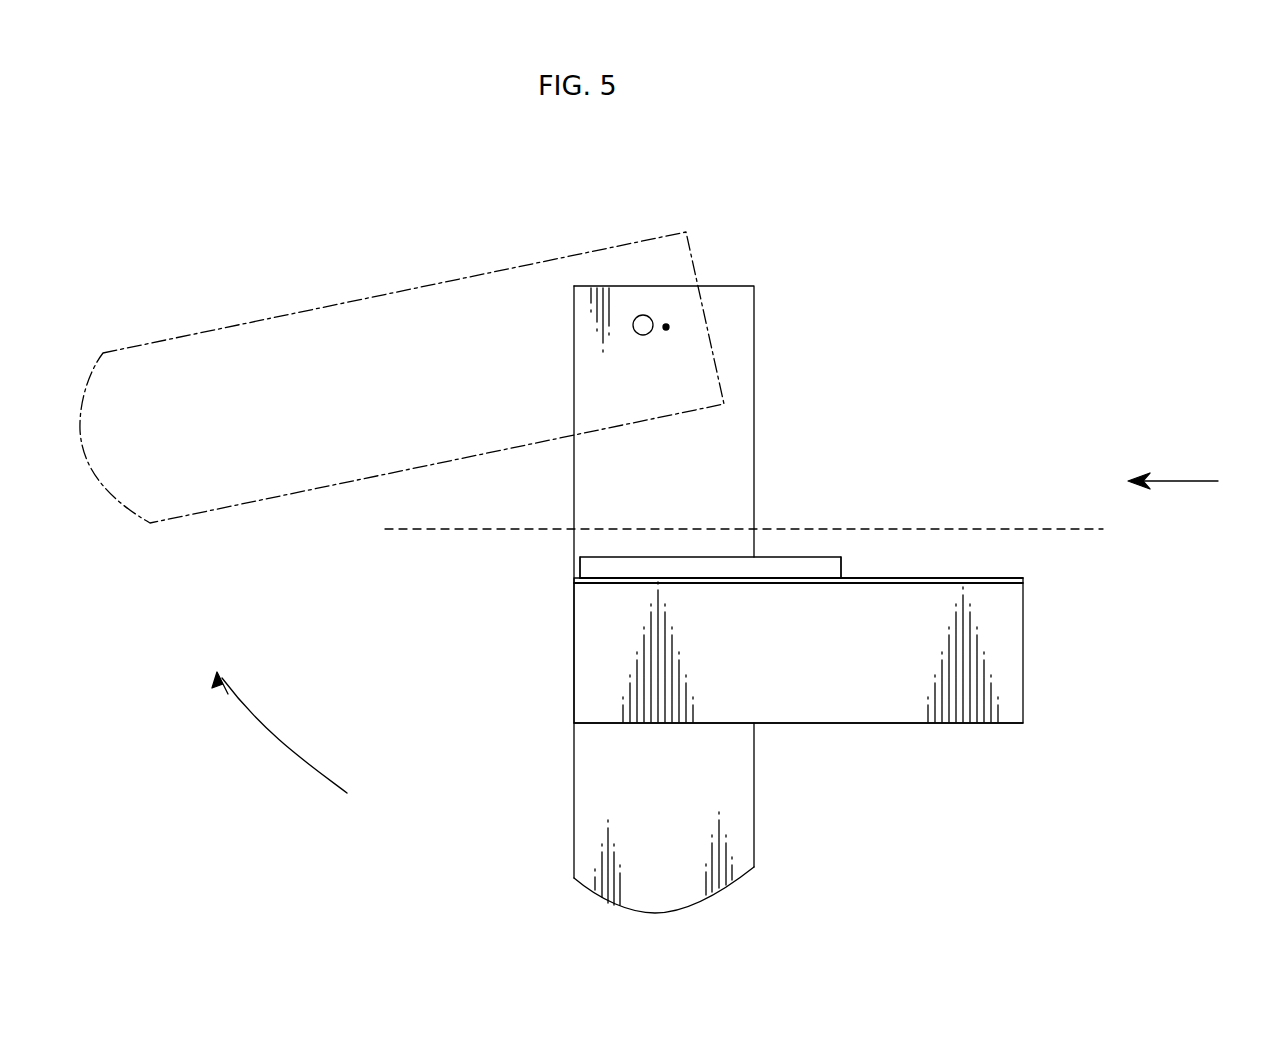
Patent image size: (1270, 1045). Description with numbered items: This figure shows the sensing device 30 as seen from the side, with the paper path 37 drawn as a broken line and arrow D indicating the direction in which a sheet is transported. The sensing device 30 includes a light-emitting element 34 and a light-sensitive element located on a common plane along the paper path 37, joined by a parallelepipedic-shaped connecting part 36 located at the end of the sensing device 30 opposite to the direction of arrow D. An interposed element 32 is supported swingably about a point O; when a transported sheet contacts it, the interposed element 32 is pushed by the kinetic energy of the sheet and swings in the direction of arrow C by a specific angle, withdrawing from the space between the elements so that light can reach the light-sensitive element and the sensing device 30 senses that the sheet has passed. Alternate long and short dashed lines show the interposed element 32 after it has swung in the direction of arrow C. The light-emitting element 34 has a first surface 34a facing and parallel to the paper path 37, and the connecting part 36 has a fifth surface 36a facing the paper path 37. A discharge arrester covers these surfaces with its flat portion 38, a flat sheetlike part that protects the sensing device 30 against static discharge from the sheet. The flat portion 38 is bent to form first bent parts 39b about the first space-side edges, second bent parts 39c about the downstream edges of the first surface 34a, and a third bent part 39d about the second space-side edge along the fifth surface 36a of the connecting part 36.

The sensing device 30 is at (1010, 276).
The interposed element 32 is at (733, 325).
The light-emitting element 34 is at (911, 733).
The first surface 34a is at (803, 583).
The connecting part 36 is at (1037, 661).
The fifth surface 36a is at (1005, 580).
The paper path 37 is at (1014, 525).
The flat portion 38 is at (600, 588).
The first bent parts 39b is at (675, 567).
The second bent parts 39c is at (578, 568).
The third bent part 39d is at (843, 568).